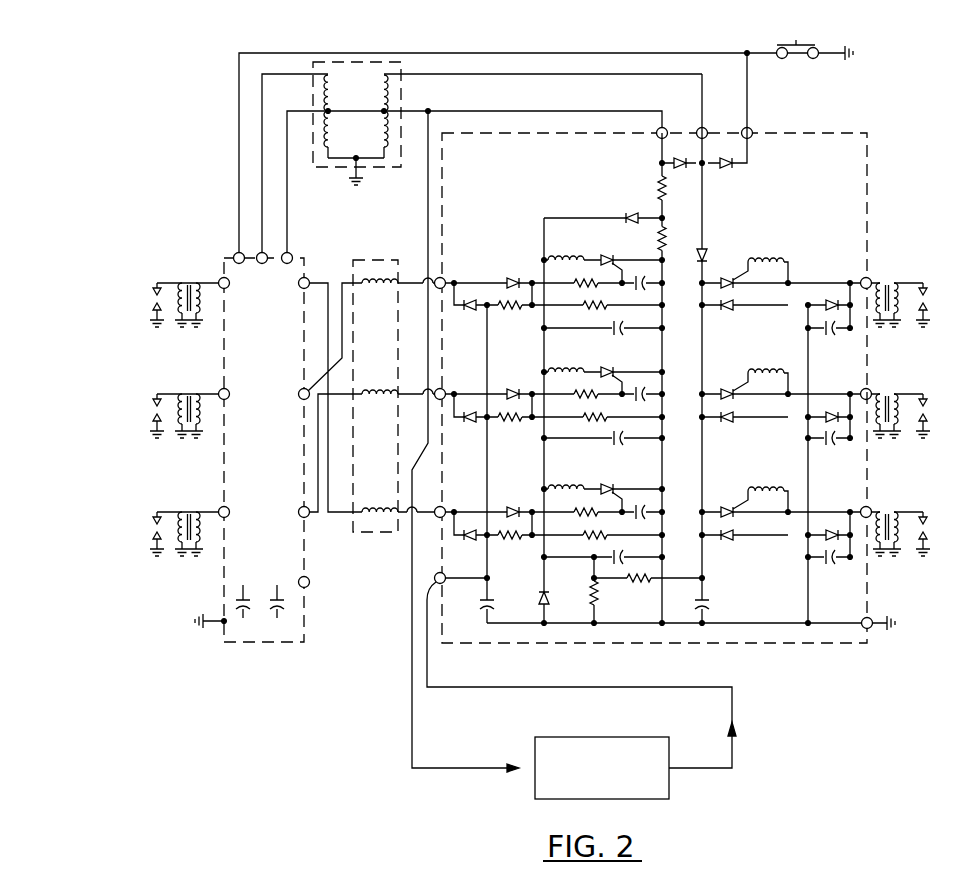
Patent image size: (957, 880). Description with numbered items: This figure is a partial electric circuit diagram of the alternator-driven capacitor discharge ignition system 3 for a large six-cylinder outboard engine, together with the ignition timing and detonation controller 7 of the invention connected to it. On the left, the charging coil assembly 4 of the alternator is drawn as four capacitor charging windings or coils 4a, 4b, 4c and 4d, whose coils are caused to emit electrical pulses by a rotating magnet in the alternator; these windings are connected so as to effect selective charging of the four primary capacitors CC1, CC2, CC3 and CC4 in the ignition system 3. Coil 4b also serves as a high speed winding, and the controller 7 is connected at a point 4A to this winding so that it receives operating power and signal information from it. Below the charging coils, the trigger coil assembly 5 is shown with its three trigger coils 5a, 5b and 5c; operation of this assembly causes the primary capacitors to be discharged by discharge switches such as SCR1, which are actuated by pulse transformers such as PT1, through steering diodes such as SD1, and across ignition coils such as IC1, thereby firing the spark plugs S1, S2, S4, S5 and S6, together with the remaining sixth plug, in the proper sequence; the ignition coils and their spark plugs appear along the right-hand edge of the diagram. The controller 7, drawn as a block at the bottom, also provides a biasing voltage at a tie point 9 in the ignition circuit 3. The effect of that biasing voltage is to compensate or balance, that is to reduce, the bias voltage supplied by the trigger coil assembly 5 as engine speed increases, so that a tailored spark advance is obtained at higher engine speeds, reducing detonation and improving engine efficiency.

The capacitor discharge ignition system 3 is at (375, 229).
The charging coil assembly 4 is at (384, 169).
The capacitor charging winding 4a is at (383, 90).
The capacitor charging winding 4b is at (383, 139).
The capacitor charging winding 4c is at (333, 143).
The capacitor charging winding 4d is at (333, 100).
The connection point 4A is at (430, 110).
The trigger coil assembly 5 is at (388, 262).
The trigger coil 5a is at (376, 290).
The trigger coil 5b is at (378, 390).
The trigger coil 5c is at (378, 508).
The ignition timing and detonation controller 7 is at (635, 737).
The tie point 9 is at (433, 577).
The spark plug S1 is at (930, 302).
The spark plug S2 is at (155, 300).
The spark plug S4 is at (155, 410).
The spark plug S5 is at (930, 532).
The spark plug S6 is at (155, 528).
The primary capacitor CC1 is at (711, 601).
The primary capacitor CC2 is at (284, 610).
The primary capacitor CC3 is at (495, 600).
The primary capacitor CC4 is at (250, 597).
The pulse transformer PT1 is at (562, 256).
The discharge switch SCR1 is at (607, 255).
The steering diode SD1 is at (832, 299).
The ignition coil IC1 is at (885, 280).